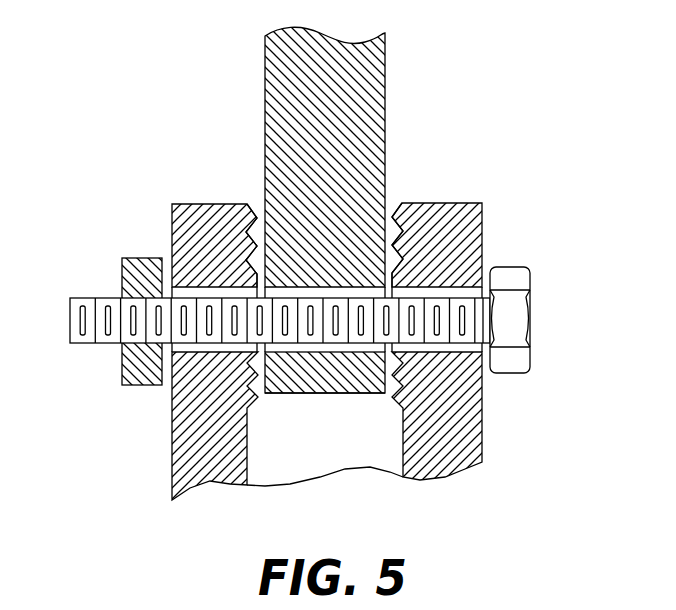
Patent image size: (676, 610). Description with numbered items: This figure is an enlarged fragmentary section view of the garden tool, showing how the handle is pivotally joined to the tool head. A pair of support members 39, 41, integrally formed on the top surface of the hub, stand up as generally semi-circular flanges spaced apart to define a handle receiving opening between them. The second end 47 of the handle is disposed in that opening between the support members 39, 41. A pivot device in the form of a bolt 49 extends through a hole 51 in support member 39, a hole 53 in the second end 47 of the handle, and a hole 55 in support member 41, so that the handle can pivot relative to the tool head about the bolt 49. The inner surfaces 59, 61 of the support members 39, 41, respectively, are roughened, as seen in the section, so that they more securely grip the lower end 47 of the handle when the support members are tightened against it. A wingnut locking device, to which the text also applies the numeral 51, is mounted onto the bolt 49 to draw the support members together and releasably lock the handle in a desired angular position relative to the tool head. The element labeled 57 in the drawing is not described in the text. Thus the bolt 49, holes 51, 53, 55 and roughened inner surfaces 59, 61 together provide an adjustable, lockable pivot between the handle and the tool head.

The support member 39 is at (482, 232).
The support member 41 is at (217, 204).
The second end 47 is at (265, 50).
The bolt 49 is at (100, 297).
The hole 51 is at (442, 347).
The hole 53 is at (345, 395).
The hole 55 is at (203, 345).
The washer 57 is at (122, 368).
The inner surface 59 is at (391, 215).
The inner surface 61 is at (262, 205).